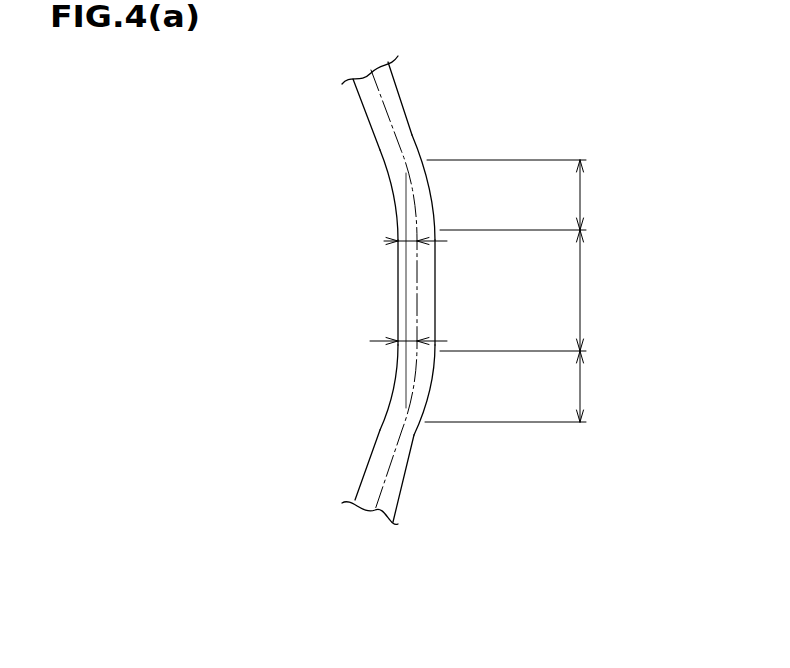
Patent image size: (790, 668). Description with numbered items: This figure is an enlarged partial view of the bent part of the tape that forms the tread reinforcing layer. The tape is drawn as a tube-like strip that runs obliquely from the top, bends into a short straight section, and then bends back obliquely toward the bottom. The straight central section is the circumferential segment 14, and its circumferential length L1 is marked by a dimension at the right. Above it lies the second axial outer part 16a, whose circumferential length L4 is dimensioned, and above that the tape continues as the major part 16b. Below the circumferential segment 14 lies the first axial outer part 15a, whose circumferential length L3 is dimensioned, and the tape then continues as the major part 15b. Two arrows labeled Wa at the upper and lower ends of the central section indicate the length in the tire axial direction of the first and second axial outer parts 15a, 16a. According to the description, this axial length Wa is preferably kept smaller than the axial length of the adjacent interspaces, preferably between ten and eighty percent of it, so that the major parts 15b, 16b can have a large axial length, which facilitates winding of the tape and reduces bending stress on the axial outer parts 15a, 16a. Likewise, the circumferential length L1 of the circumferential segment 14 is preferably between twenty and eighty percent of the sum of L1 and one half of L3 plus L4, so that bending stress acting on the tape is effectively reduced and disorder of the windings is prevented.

The circumferential segment 14 is at (425, 290).
The first axial outer part 15a is at (425, 378).
The major part 15b is at (392, 473).
The second axial outer part 16a is at (425, 184).
The major part 16b is at (392, 105).
The length in the tire axial direction Wa is at (405, 246).
The circumferential length of the circumferential segment L1 is at (600, 290).
The circumferential length of the first axial outer part L3 is at (600, 386).
The circumferential length of the second axial outer part L4 is at (600, 195).